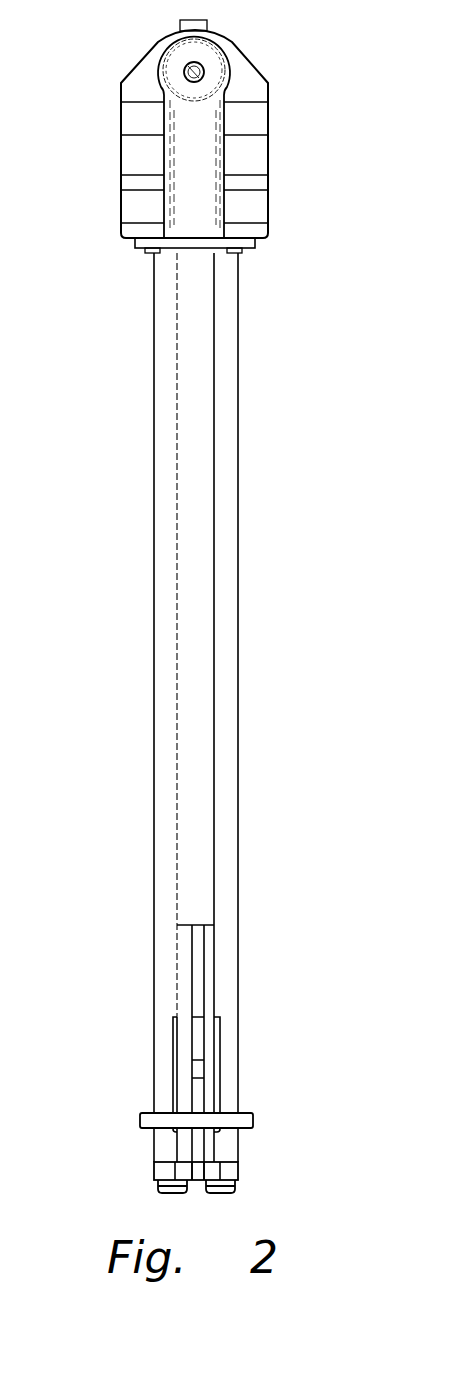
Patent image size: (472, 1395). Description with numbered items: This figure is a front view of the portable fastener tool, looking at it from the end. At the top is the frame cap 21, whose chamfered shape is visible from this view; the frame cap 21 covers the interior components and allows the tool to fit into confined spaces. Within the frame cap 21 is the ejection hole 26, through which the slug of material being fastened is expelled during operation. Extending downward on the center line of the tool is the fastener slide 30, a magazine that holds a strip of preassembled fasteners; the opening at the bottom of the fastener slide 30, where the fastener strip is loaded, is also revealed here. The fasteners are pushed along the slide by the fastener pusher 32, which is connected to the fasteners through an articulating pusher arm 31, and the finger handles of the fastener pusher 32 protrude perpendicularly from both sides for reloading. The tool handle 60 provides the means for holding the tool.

The frame cap 21 is at (238, 55).
The ejection hole 26 is at (187, 65).
The fastener slide 30 is at (195, 510).
The articulating pusher arm 31 is at (195, 953).
The fastener pusher 32 is at (228, 1088).
The tool handle 60 is at (163, 433).